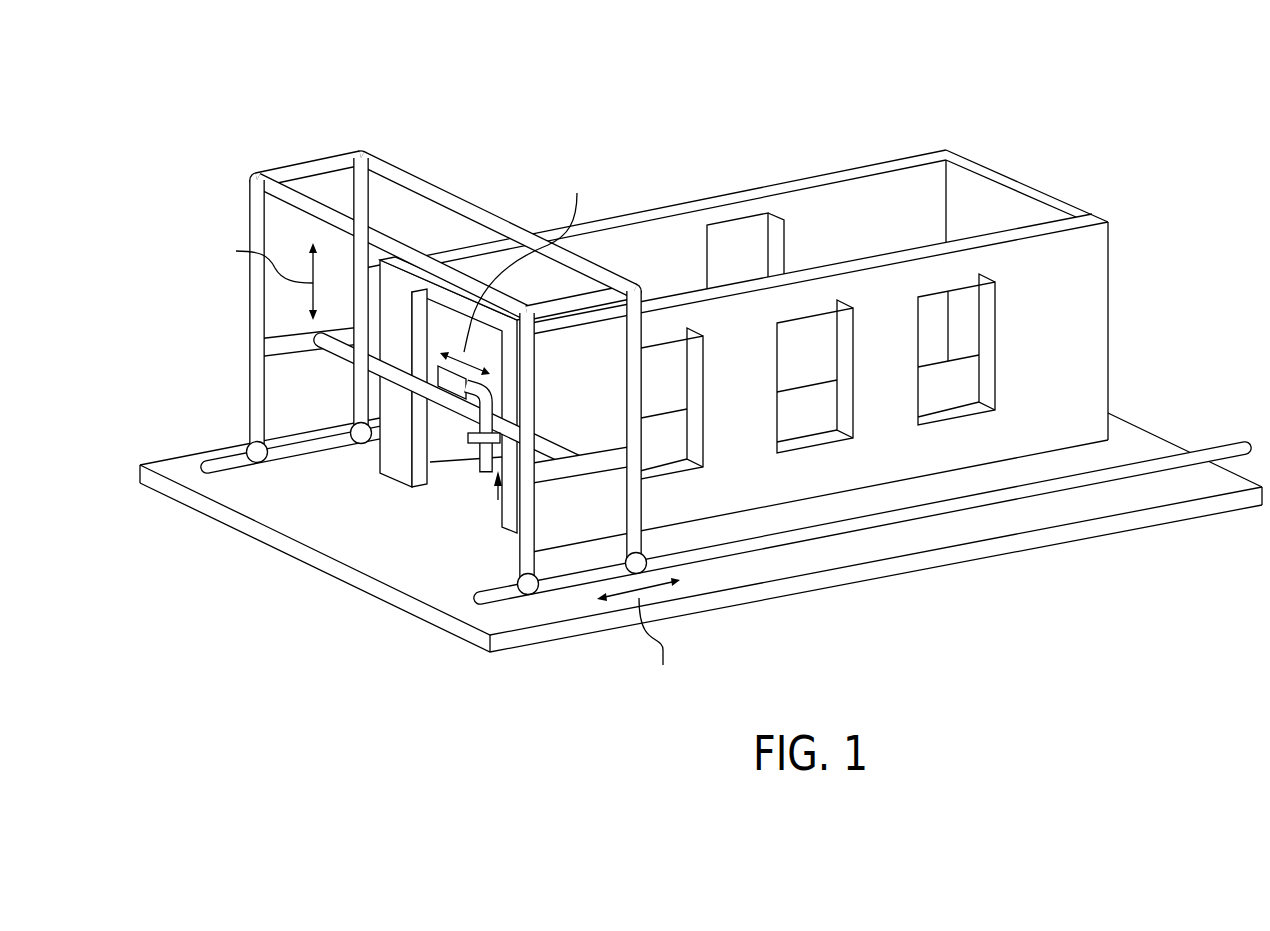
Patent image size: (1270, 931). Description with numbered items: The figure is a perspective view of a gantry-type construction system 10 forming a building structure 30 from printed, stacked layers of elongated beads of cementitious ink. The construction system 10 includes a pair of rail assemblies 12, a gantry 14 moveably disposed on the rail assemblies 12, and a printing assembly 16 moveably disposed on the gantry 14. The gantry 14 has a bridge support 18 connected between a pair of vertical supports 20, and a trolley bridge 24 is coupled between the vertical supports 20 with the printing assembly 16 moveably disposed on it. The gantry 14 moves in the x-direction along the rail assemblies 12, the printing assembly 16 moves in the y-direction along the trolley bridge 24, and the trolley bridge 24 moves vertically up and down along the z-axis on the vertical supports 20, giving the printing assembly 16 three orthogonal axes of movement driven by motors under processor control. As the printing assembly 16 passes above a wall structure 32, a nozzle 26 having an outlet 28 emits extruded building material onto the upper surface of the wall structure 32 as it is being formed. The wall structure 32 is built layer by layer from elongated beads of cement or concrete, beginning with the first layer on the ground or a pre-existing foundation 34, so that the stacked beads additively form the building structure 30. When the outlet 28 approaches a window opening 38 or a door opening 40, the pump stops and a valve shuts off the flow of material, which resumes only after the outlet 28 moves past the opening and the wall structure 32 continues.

The construction system 10 is at (701, 400).
The rail assemblies 12 is at (226, 456).
The gantry 14 is at (450, 345).
The printing assembly 16 is at (447, 388).
The bridge support 18 is at (441, 193).
The vertical supports 20 is at (250, 366).
The trolley bridge 24 is at (340, 345).
The nozzle 26 is at (470, 429).
The outlet 28 is at (487, 472).
The building structure 30 is at (776, 330).
The wall structure 32 is at (1108, 347).
The foundation 34 is at (1170, 441).
The window opening 38 is at (784, 245).
The door opening 40 is at (498, 500).